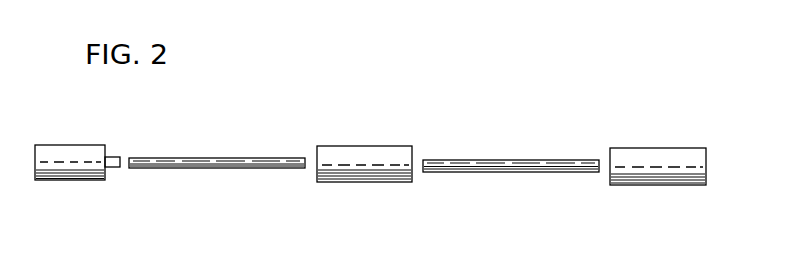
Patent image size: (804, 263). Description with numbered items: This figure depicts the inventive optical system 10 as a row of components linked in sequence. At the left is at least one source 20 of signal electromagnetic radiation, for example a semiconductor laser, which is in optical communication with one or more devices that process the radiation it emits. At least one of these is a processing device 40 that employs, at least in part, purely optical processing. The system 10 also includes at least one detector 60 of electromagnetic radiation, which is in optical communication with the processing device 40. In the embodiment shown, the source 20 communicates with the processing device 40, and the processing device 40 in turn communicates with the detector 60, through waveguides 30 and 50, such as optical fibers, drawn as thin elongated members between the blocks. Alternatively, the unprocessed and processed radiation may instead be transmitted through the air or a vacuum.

The optical system 10 is at (353, 94).
The source of electromagnetic radiation 20 is at (73, 149).
The waveguide 30 is at (257, 157).
The processing device 40 is at (378, 152).
The waveguide 50 is at (548, 158).
The detector of electromagnetic radiation 60 is at (675, 152).